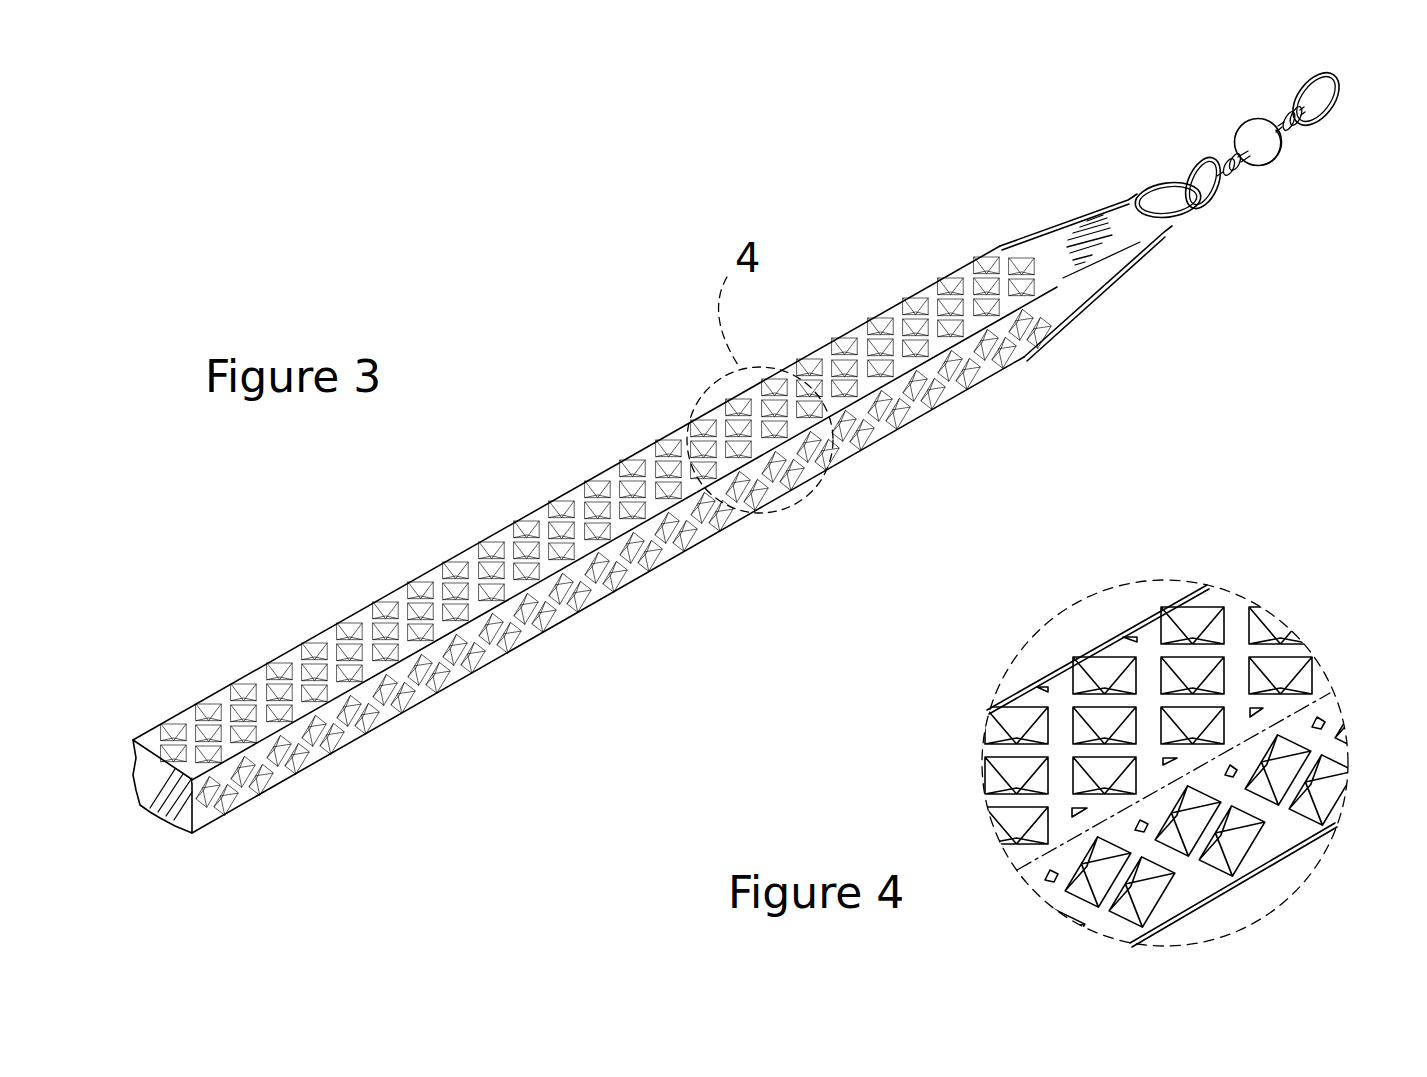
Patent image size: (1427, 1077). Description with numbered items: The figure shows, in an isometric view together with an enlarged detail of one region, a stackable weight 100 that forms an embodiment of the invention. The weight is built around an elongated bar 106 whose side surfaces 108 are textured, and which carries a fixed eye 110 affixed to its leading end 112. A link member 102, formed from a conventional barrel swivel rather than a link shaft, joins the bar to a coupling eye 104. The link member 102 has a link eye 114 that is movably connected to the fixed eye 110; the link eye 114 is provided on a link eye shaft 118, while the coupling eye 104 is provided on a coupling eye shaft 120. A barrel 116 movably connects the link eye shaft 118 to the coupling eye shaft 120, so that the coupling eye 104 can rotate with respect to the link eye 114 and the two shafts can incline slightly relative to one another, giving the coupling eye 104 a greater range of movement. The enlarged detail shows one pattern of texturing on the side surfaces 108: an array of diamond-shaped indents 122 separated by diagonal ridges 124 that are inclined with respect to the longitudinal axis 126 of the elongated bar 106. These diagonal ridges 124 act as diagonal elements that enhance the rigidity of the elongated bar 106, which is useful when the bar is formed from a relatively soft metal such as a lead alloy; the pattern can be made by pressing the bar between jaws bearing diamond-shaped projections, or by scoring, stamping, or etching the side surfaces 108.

In FIG. 3, the stackable weight 100 is at (520, 257).
In FIG. 3, the link member 102 is at (1306, 206).
In FIG. 3, the coupling eye 104 is at (1335, 97).
In FIG. 3, the elongated bar 106 is at (605, 445).
In FIG. 4, the elongated bar 106 is at (1038, 660).
In FIG. 3, the side surfaces 108 is at (473, 640).
In FIG. 4, the side surfaces 108 is at (1362, 828).
In FIG. 3, the fixed eye 110 is at (1143, 196).
In FIG. 3, the leading end 112 is at (1108, 268).
In FIG. 3, the link eye 114 is at (1195, 167).
In FIG. 3, the barrel 116 is at (1255, 128).
In FIG. 3, the link eye shaft 118 is at (1235, 167).
In FIG. 3, the coupling eye shaft 120 is at (1293, 132).
In FIG. 4, the diamond-shaped indents 122 is at (1280, 660).
In FIG. 4, the diagonal ridges 124 is at (1012, 802).
In FIG. 4, the longitudinal axis 126 is at (1247, 737).